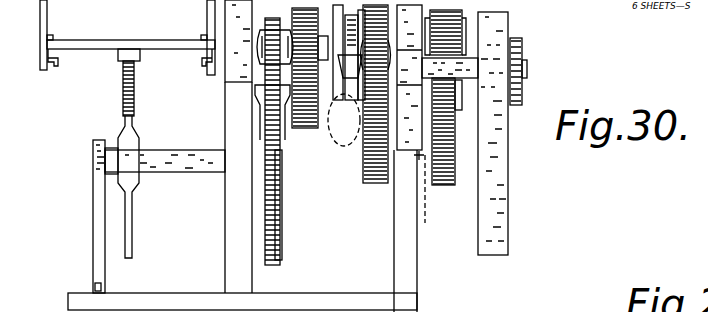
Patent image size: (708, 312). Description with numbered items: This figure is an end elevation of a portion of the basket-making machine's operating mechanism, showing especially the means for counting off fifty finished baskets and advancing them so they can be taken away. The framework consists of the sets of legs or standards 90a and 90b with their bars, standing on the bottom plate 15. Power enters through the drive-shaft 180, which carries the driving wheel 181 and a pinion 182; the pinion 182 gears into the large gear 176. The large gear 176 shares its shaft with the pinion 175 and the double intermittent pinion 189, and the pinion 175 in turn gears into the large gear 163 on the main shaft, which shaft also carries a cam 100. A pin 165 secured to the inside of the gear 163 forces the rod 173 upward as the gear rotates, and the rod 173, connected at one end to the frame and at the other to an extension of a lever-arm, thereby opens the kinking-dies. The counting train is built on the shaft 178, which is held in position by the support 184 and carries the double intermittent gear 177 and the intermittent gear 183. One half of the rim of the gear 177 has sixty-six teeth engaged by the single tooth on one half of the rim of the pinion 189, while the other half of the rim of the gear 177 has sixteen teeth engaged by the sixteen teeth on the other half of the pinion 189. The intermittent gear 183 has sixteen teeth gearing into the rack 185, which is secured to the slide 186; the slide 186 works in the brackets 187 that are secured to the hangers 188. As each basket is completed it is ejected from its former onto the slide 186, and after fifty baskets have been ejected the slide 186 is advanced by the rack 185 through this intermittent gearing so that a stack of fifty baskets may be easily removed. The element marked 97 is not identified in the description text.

The bottom plate 15 is at (323, 306).
The legs or standards 90a is at (405, 231).
The legs or standards 90b is at (238, 146).
The shaft 97 is at (349, 85).
The cam 100 is at (344, 120).
The large gear 163 is at (443, 184).
The pin 165 is at (433, 197).
The rod 173 is at (421, 158).
The pinion 175 is at (453, 97).
The large gear 176 is at (376, 105).
The double intermittent gear 177 is at (280, 151).
The shaft 178 is at (284, 162).
The drive-shaft 180 is at (527, 70).
The driving wheel 181 is at (493, 133).
The pinion 182 is at (410, 77).
The intermittent gear 183 is at (131, 215).
The support 184 is at (100, 275).
The rack 185 is at (140, 58).
The slide 186 is at (114, 49).
The brackets 187 is at (133, 73).
The hangers 188 is at (46, 14).
The double intermittent pinion 189 is at (275, 34).